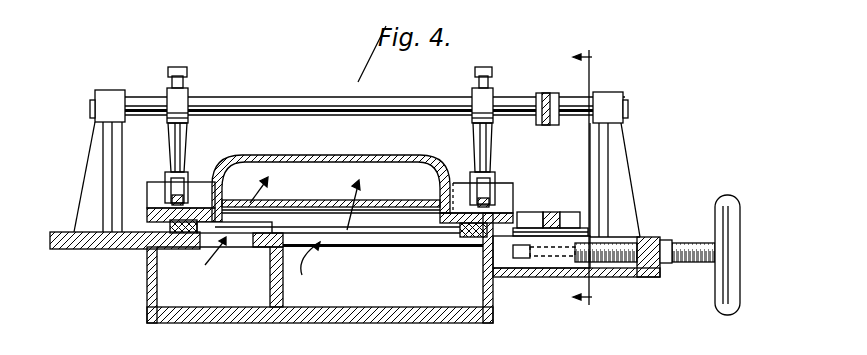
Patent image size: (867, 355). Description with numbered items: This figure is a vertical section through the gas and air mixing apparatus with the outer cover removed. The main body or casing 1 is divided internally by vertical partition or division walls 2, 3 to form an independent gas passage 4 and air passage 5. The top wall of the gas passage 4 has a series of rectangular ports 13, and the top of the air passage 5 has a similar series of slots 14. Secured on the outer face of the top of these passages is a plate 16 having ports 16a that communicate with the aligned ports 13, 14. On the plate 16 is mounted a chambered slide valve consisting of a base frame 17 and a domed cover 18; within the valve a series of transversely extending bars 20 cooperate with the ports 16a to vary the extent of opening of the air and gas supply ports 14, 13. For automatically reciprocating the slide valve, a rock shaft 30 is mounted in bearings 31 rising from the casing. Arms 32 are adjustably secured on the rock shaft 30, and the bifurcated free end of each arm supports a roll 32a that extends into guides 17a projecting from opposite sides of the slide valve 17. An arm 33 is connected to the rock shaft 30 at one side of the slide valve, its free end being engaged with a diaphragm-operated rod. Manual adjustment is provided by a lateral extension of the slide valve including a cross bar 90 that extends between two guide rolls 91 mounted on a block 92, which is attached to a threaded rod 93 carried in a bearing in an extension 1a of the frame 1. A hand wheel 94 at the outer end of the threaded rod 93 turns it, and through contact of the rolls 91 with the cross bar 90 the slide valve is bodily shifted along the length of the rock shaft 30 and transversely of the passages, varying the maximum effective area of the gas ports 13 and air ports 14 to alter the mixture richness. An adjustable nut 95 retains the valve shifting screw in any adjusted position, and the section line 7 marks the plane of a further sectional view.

The main body or casing 1 is at (146, 302).
The extension 1a is at (646, 278).
The partition wall 2 is at (277, 296).
The partition wall 3 is at (362, 163).
The gas passage 4 is at (249, 270).
The air passage 5 is at (388, 268).
The section line 7 is at (588, 177).
The ports 13 is at (241, 237).
The slots 14 is at (407, 244).
The plate 16 is at (184, 236).
The ports 16a is at (378, 228).
The base frame 17 is at (150, 222).
The guides 17a is at (153, 190).
The domed cover 18 is at (336, 154).
The bars 20 is at (387, 212).
The rock shaft 30 is at (325, 97).
The bearings 31 is at (90, 182).
The arms 32 is at (186, 136).
The roll 32a is at (178, 184).
The arm 33 is at (546, 93).
The cross bar 90 is at (562, 258).
The guide rolls 91 is at (568, 218).
The block 92 is at (531, 270).
The threaded rod 93 is at (704, 270).
The hand wheel 94 is at (730, 284).
The adjustable nut 95 is at (666, 250).